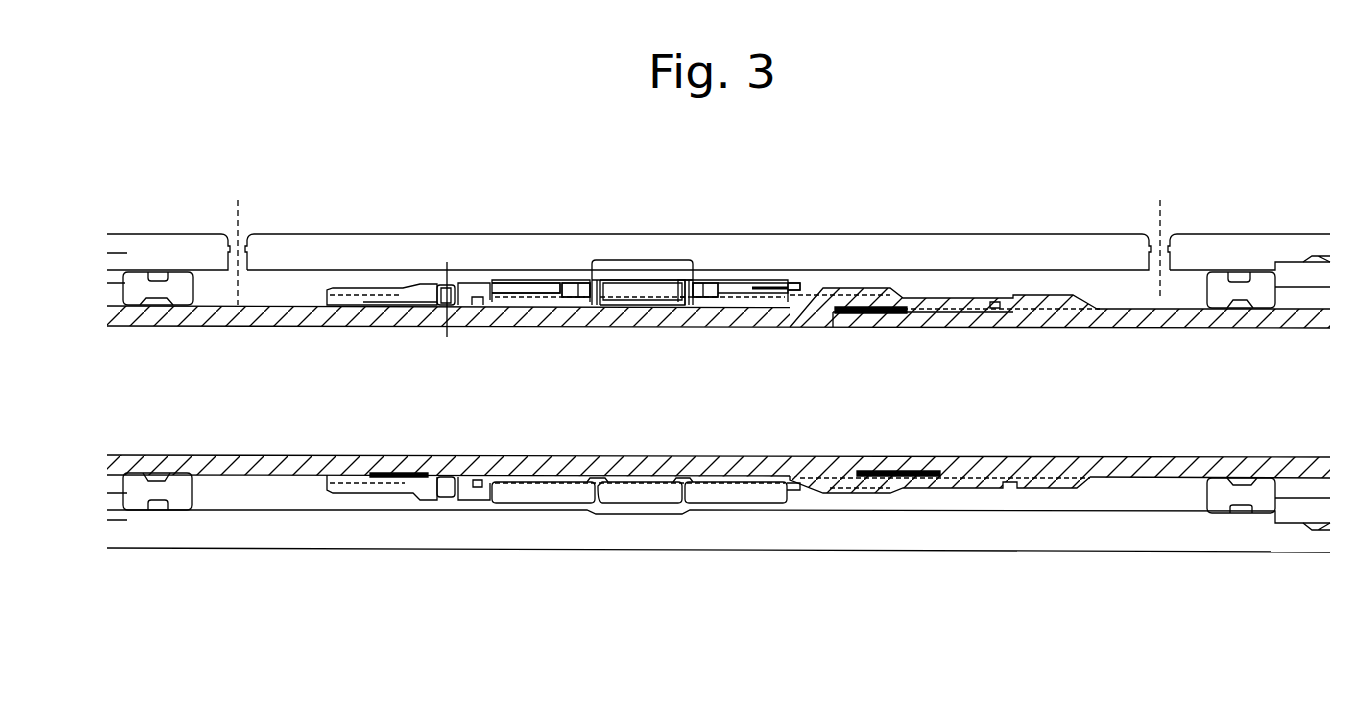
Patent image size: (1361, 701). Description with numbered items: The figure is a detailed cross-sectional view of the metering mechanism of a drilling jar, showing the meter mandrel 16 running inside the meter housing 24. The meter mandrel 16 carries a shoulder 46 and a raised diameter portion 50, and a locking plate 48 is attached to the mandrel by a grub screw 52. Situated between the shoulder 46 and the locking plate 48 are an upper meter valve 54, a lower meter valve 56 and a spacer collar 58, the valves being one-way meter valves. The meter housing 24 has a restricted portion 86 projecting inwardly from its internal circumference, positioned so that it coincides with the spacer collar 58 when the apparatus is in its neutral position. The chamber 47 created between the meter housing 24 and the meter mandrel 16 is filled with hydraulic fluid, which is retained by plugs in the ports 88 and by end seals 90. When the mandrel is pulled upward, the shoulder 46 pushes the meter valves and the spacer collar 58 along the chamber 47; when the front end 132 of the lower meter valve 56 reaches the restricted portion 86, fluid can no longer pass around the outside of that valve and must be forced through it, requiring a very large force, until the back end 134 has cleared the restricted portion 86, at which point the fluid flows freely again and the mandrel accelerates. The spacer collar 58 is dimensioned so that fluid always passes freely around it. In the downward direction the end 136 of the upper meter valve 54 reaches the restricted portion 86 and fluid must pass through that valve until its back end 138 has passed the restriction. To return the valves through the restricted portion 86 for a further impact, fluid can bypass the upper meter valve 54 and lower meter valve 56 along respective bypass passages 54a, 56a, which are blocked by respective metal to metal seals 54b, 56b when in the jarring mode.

The meter mandrel 16 is at (288, 316).
The meter housing 24 is at (1037, 257).
The shoulder 46 is at (800, 290).
The chamber 47 is at (942, 287).
The locking plate 48 is at (365, 293).
The raised diameter portion 50 is at (692, 305).
The grub screw 52 is at (445, 285).
The upper meter valve 54 is at (528, 281).
The bypass passage 54a is at (544, 300).
The metal to metal seal 54b is at (490, 305).
The lower meter valve 56 is at (746, 281).
The bypass passage 56a is at (750, 300).
The metal to metal seal 56b is at (800, 300).
The spacer collar 58 is at (622, 290).
The restricted portion 86 is at (641, 260).
The ports 88 is at (238, 210).
The end seals 90 is at (140, 278).
The front end 132 is at (694, 283).
The back end 134 is at (786, 285).
The end 136 is at (590, 270).
The back end 138 is at (503, 282).